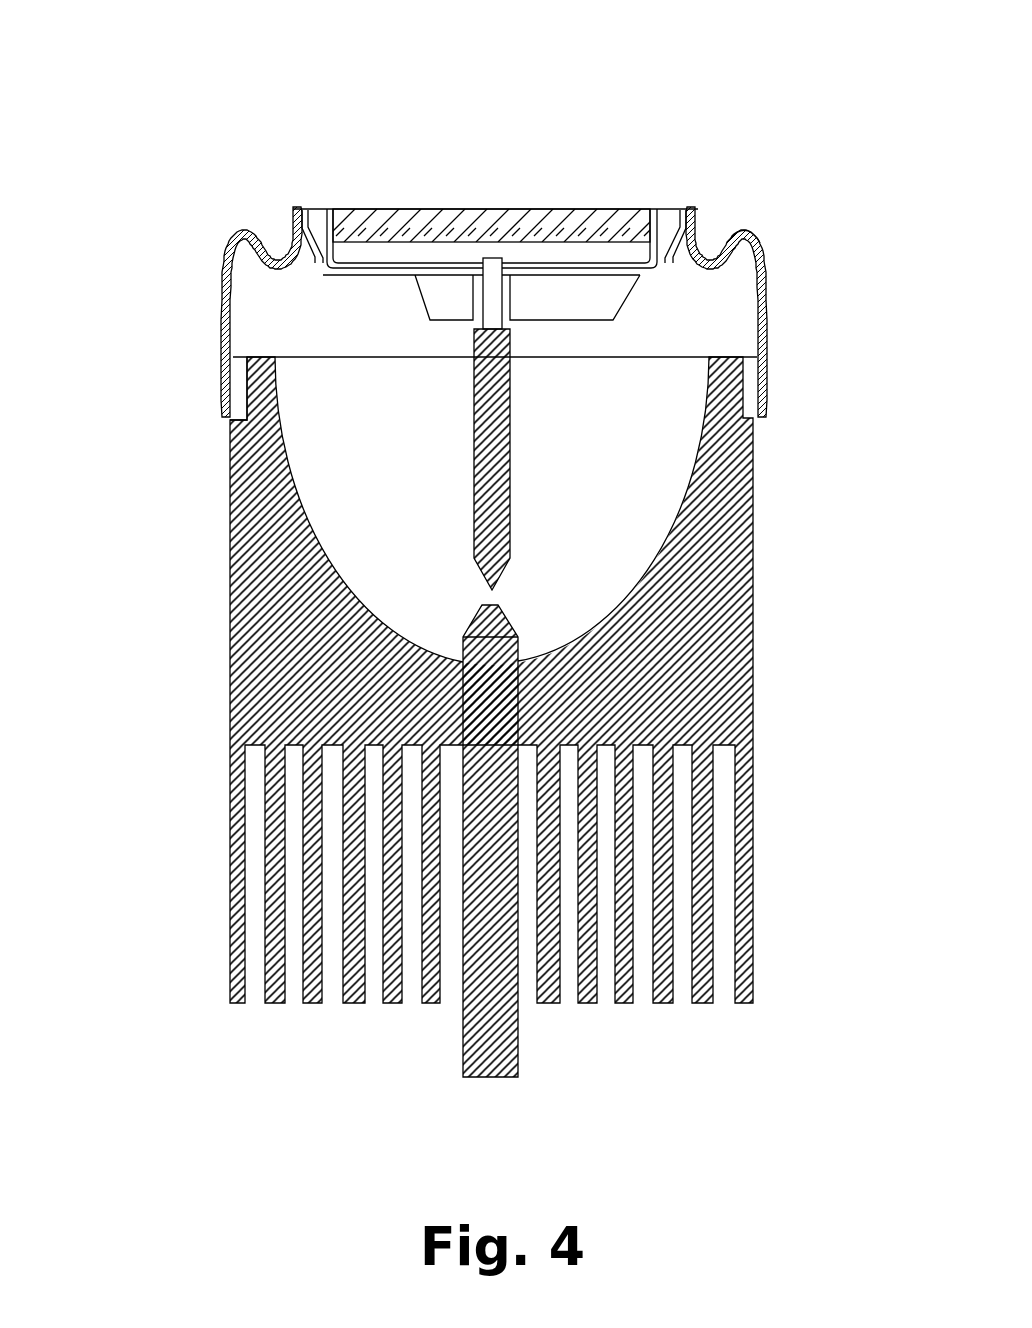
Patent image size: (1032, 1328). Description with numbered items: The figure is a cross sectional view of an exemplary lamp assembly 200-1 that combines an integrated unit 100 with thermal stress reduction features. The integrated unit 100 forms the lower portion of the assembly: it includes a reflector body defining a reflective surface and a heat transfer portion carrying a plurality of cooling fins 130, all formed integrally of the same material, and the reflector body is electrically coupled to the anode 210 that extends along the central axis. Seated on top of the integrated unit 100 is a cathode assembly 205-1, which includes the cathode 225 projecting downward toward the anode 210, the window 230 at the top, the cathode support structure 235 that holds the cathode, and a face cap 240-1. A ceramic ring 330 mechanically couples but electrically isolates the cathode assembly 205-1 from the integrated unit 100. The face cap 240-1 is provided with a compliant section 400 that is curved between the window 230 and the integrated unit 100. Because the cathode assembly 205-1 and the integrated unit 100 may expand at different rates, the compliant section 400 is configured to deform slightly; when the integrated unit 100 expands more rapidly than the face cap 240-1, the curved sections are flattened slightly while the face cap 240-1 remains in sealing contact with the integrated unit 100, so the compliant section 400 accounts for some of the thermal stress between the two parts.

The lamp assembly 200-1 is at (226, 42).
The cathode assembly 205-1 is at (195, 338).
The cathode 225 is at (511, 447).
The window 230 is at (611, 208).
The cathode support structure 235 is at (423, 293).
The face cap 240-1 is at (763, 278).
The compliant section 400 is at (733, 234).
The ceramic ring 330 is at (240, 423).
The integrated unit 100 is at (232, 667).
The cooling fins 130 is at (230, 968).
The anode 210 is at (460, 1005).